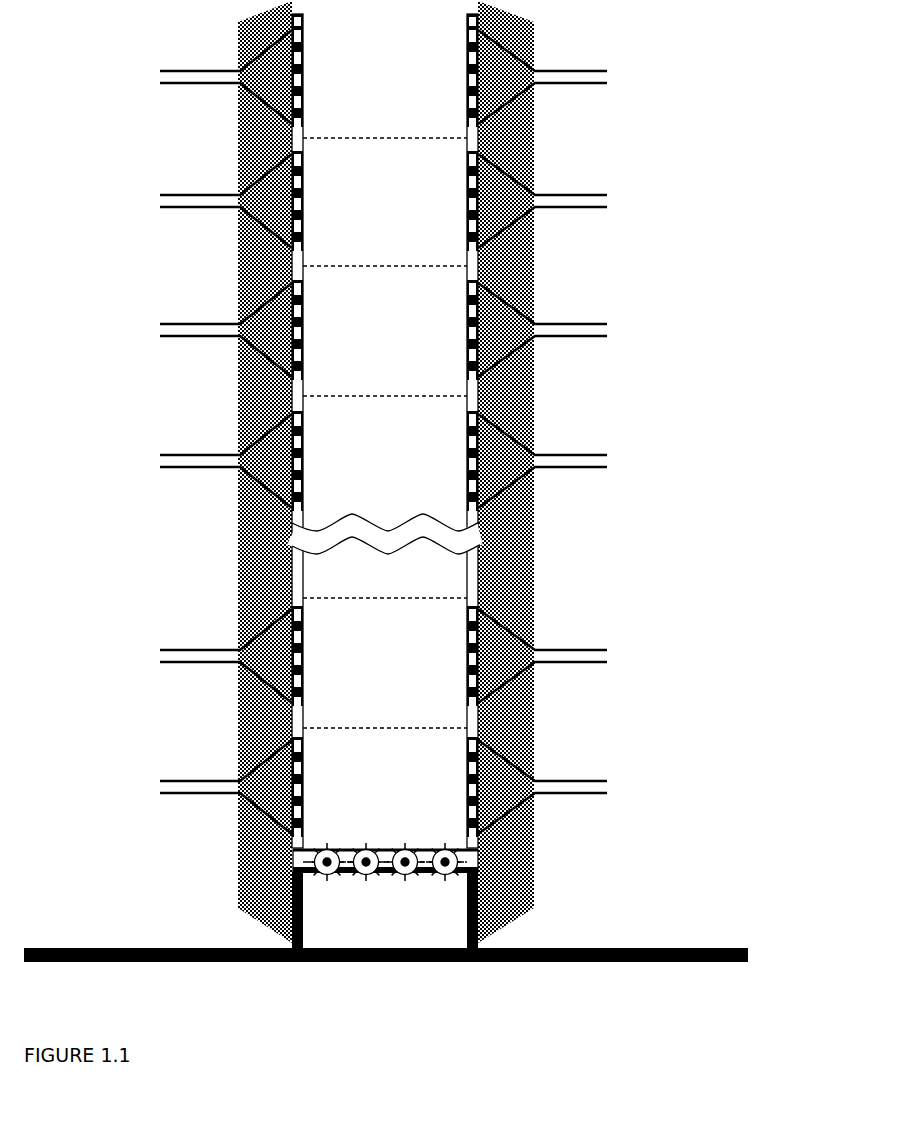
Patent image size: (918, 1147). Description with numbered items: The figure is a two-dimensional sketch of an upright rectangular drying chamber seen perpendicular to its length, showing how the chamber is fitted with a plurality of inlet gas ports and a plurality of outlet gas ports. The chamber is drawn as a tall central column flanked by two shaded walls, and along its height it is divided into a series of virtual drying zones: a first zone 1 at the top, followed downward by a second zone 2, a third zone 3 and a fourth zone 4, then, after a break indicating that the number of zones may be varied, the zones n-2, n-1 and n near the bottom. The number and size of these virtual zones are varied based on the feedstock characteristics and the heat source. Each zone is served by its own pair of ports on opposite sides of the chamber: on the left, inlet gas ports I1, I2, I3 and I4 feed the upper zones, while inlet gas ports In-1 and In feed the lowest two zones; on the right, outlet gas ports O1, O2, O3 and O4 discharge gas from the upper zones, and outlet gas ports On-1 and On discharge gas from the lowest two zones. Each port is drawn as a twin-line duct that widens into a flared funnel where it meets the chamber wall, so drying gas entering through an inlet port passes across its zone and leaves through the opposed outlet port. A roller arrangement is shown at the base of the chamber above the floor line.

The virtual drying zone 1 is at (385, 76).
The virtual drying zone 2 is at (385, 228).
The virtual drying zone 3 is at (385, 357).
The virtual drying zone 4 is at (385, 456).
The virtual drying zone n-2 is at (385, 577).
The virtual drying zone n-1 is at (385, 684).
The virtual drying zone n is at (385, 808).
The inlet gas port I1 is at (226, 74).
The inlet gas port I2 is at (226, 200).
The inlet gas port I3 is at (226, 329).
The inlet gas port I4 is at (226, 458).
The inlet gas port In-1 is at (226, 653).
The inlet gas port In is at (226, 787).
The outlet gas port O1 is at (545, 75).
The outlet gas port O2 is at (545, 201).
The outlet gas port O3 is at (545, 330).
The outlet gas port O4 is at (546, 461).
The outlet gas port On-1 is at (554, 654).
The outlet gas port On is at (546, 787).